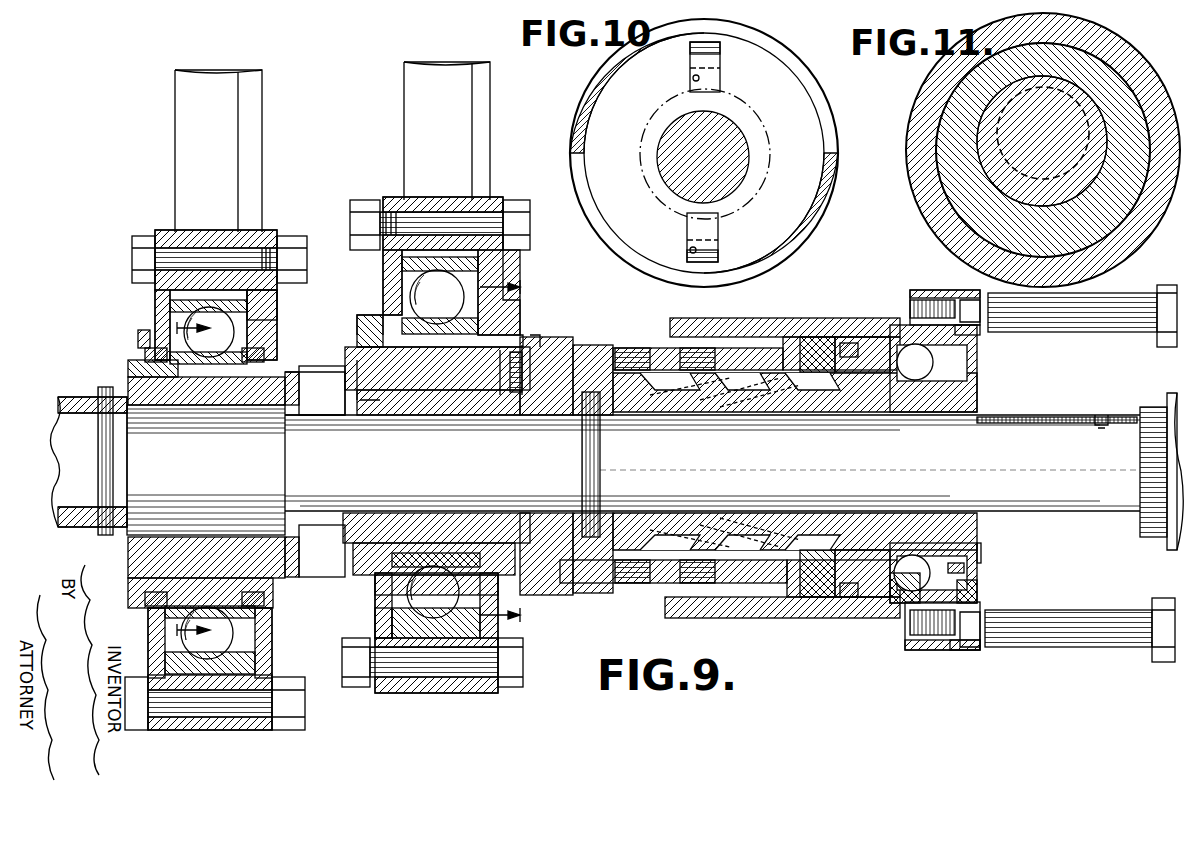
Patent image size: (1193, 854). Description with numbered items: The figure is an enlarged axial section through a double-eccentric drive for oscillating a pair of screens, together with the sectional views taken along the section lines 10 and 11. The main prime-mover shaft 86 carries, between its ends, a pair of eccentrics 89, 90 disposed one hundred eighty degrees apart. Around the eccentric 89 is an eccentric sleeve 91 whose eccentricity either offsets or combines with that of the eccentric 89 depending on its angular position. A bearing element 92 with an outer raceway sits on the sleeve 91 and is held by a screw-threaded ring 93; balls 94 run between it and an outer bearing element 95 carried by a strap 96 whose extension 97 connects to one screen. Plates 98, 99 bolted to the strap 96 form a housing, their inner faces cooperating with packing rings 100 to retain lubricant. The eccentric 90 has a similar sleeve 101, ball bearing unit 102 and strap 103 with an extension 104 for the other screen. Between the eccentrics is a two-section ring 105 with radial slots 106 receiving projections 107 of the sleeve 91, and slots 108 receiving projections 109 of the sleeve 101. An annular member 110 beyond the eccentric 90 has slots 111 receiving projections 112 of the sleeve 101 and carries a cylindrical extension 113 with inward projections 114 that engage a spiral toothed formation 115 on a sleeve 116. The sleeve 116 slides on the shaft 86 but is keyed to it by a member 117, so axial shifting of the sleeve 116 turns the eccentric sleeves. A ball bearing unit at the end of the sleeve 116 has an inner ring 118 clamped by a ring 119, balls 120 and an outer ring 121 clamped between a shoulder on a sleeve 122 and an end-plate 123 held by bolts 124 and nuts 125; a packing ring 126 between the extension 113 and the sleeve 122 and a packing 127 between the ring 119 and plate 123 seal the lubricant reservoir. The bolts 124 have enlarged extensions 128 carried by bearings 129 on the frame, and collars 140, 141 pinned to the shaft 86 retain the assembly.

In FIG. 9, the section line 10— 10 is at (512, 451).
In FIG. 9, the section line 11— 11 is at (202, 480).
In FIG. 9, the main prime-mover shaft 86 is at (73, 420).
In FIG. 10, the main prime-mover shaft 86 is at (727, 195).
In FIG. 11, the main prime-mover shaft 86 is at (1000, 120).
In FIG. 9, the eccentric 89 is at (160, 500).
In FIG. 11, the eccentric 89 is at (995, 135).
In FIG. 9, the eccentric 90 is at (520, 455).
In FIG. 9, the eccentric sleeve 91 is at (140, 388).
In FIG. 11, the eccentric sleeve 91 is at (950, 155).
In FIG. 9, the bearing element 92 is at (148, 338).
In FIG. 11, the bearing element 92 is at (920, 183).
In FIG. 9, the ring 93 is at (128, 368).
In FIG. 9, the balls 94 is at (190, 342).
In FIG. 9, the bearing element 95 is at (277, 302).
In FIG. 9, the strap 96 is at (262, 235).
In FIG. 9, the extension 97 is at (254, 131).
In FIG. 9, the plate 98 is at (155, 232).
In FIG. 9, the plate 99 is at (290, 236).
In FIG. 9, the packing rings 100 is at (145, 355).
In FIG. 9, the sleeve 101 is at (500, 345).
In FIG. 10, the sleeve 101 is at (640, 254).
In FIG. 9, the ball bearing unit 102 is at (405, 305).
In FIG. 9, the strap 103 is at (485, 205).
In FIG. 9, the extension 104 is at (487, 125).
In FIG. 9, the ring 105 is at (330, 395).
In FIG. 9, the slots 106 is at (292, 372).
In FIG. 9, the projections 107 is at (340, 395).
In FIG. 9, the slots 108 is at (320, 372).
In FIG. 9, the projections 109 is at (372, 398).
In FIG. 9, the annular member 110 is at (550, 340).
In FIG. 10, the annular member 110 is at (622, 262).
In FIG. 9, the slots 111 is at (522, 395).
In FIG. 10, the slots 111 is at (692, 78).
In FIG. 9, the projections 112 is at (512, 390).
In FIG. 10, the projections 112 is at (720, 76).
In FIG. 9, the cylindrical extension 113 is at (750, 350).
In FIG. 9, the inward projections 114 is at (822, 337).
In FIG. 9, the spiral toothed formation 115 is at (780, 395).
In FIG. 9, the sleeve 116 is at (830, 405).
In FIG. 9, the key member 117 is at (1045, 405).
In FIG. 9, the inner ring 118 is at (977, 380).
In FIG. 9, the ring 119 is at (977, 548).
In FIG. 9, the balls 120 is at (977, 595).
In FIG. 9, the ring 121 is at (900, 603).
In FIG. 9, the sleeve 122 is at (888, 318).
In FIG. 9, the end-plate 123 is at (980, 335).
In FIG. 9, the bolts 124 is at (925, 290).
In FIG. 9, the nuts 125 is at (972, 282).
In FIG. 9, the packing ring 126 is at (848, 597).
In FIG. 9, the packing 127 is at (964, 568).
In FIG. 9, the enlarged extensions 128 is at (1075, 320).
In FIG. 9, the bearings 129 is at (1165, 347).
In FIG. 9, the collar 140 is at (90, 520).
In FIG. 9, the collar 141 is at (595, 537).